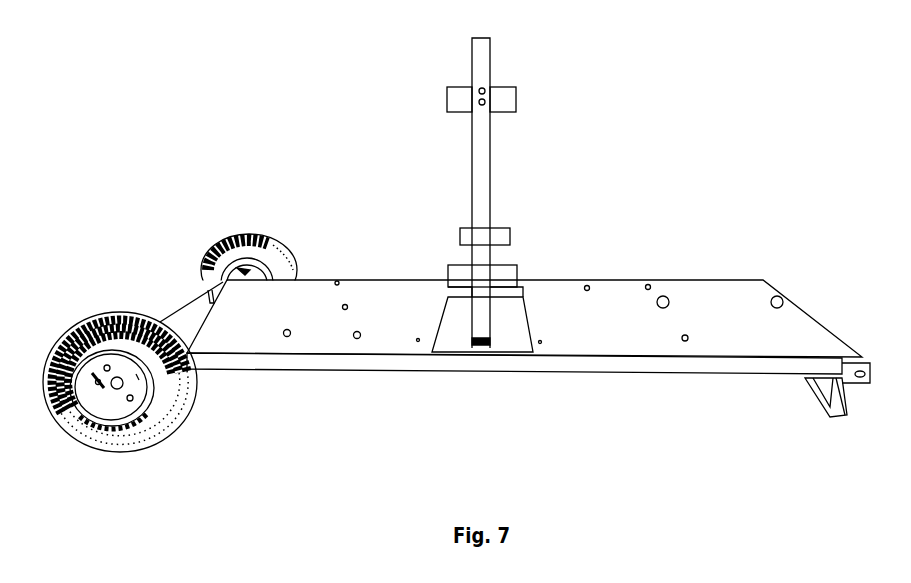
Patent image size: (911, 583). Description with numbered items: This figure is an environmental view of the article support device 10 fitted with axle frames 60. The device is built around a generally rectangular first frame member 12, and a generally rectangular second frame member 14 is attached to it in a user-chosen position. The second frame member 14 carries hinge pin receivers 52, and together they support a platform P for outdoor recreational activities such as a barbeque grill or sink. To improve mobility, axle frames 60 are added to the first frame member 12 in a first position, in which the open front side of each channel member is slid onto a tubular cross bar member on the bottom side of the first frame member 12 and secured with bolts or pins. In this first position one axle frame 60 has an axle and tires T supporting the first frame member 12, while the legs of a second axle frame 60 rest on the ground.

The article support device 10 is at (463, 414).
The first frame member 12 is at (592, 374).
The second frame member 14 is at (493, 160).
The hinge pin receivers 52 is at (517, 98).
The axle frame 60 is at (165, 322).
The platform P is at (718, 298).
The tire T is at (271, 240).